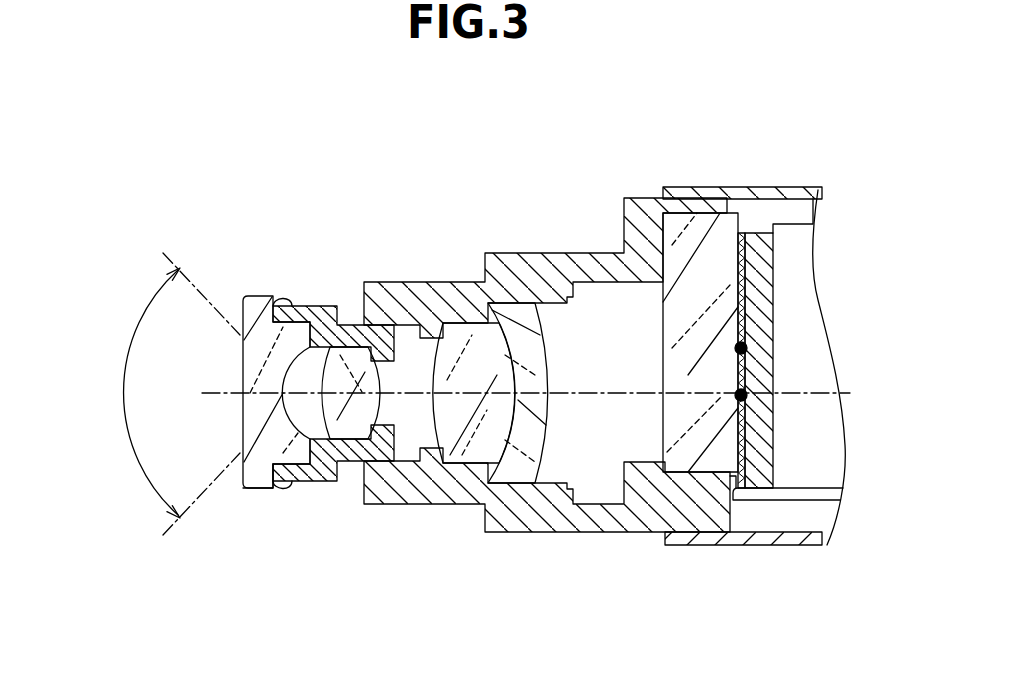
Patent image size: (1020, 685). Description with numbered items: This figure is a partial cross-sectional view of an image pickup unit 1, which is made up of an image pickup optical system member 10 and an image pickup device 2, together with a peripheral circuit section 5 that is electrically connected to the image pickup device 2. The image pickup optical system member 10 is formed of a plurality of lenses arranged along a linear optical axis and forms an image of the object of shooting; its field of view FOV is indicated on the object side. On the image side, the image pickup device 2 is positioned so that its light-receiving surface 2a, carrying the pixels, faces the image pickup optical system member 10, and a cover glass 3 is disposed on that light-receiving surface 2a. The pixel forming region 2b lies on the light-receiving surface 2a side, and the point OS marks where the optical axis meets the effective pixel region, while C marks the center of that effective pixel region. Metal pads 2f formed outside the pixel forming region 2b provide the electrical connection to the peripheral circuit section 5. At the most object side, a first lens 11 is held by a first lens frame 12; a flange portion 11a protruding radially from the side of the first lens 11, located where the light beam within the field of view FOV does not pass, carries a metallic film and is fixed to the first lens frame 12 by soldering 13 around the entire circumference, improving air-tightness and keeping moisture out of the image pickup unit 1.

The image pickup unit 1 is at (557, 253).
The image pickup device 2 is at (752, 232).
The light-receiving surface 2a is at (738, 282).
The pixel forming region 2b is at (743, 290).
The metal pads 2f is at (737, 497).
The cover glass 3 is at (682, 213).
The peripheral circuit section 5 is at (803, 500).
The image pickup optical system member 10 is at (336, 250).
The first lens 11 is at (242, 353).
The flange portion 11a is at (253, 490).
The first lens frame 12 is at (321, 483).
The soldering 13 is at (288, 490).
The center of the effective pixel region C is at (747, 348).
The intersection point OS is at (747, 396).
The field of view FOV is at (143, 313).